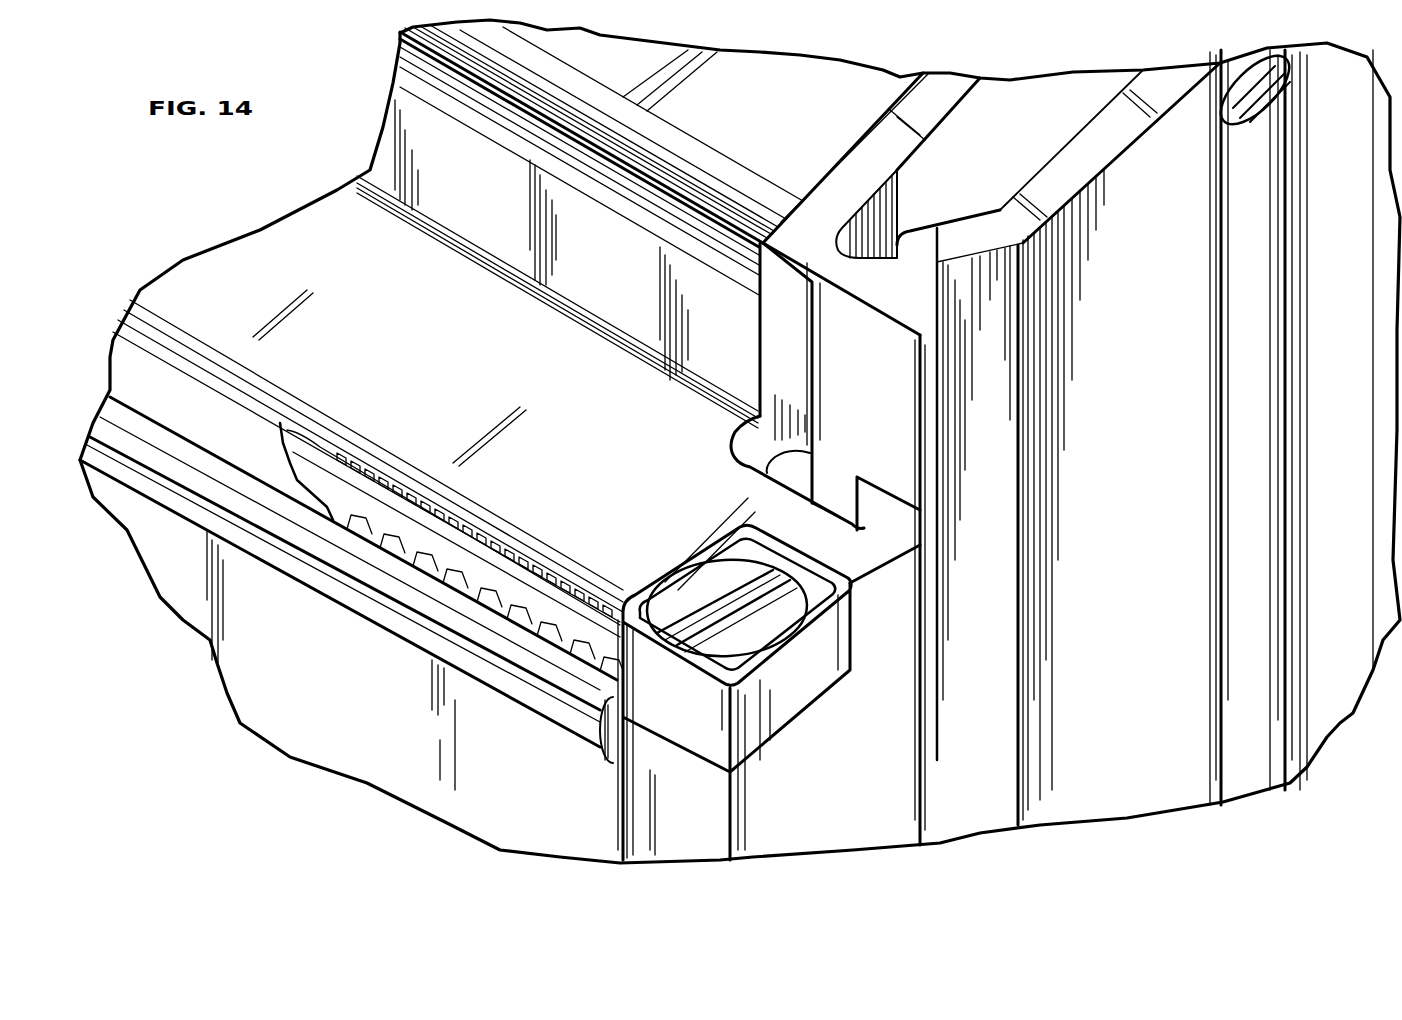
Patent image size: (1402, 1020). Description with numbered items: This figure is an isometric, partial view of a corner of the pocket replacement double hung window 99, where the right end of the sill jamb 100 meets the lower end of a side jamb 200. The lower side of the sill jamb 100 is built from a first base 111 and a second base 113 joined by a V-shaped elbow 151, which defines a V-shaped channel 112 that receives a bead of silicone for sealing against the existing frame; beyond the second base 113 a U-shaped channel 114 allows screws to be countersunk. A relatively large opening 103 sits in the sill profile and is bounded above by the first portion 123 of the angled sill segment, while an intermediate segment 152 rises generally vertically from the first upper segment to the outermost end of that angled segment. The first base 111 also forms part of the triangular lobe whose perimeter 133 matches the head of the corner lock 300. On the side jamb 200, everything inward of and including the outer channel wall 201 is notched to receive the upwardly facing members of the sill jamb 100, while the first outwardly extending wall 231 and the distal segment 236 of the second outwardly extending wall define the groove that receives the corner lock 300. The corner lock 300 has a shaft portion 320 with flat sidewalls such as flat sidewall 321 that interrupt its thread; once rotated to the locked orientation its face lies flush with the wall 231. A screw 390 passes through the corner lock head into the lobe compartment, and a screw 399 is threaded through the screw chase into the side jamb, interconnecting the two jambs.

The double hung window 99 is at (272, 709).
The sill jamb 100 is at (621, 847).
The opening 103 is at (883, 207).
The first base 111 is at (890, 503).
The V-shaped channel 112 is at (977, 400).
The second base 113 is at (1113, 138).
The U-shaped channel 114 is at (1240, 227).
The first portion of the angled sill segment 123 is at (877, 139).
The perimeter of the lobe 133 is at (653, 807).
The V-shaped elbow 151 is at (930, 233).
The intermediate segment 152 is at (873, 287).
The side jamb 200 is at (162, 498).
The outer channel wall 201 is at (730, 312).
The first outwardly extending wall 231 is at (813, 517).
The distal segment 236 is at (550, 710).
The corner lock 300 is at (672, 750).
The shaft portion 320 is at (441, 530).
The flat sidewall 321 is at (453, 550).
The screw 390 is at (677, 593).
The screw 399 is at (1233, 100).